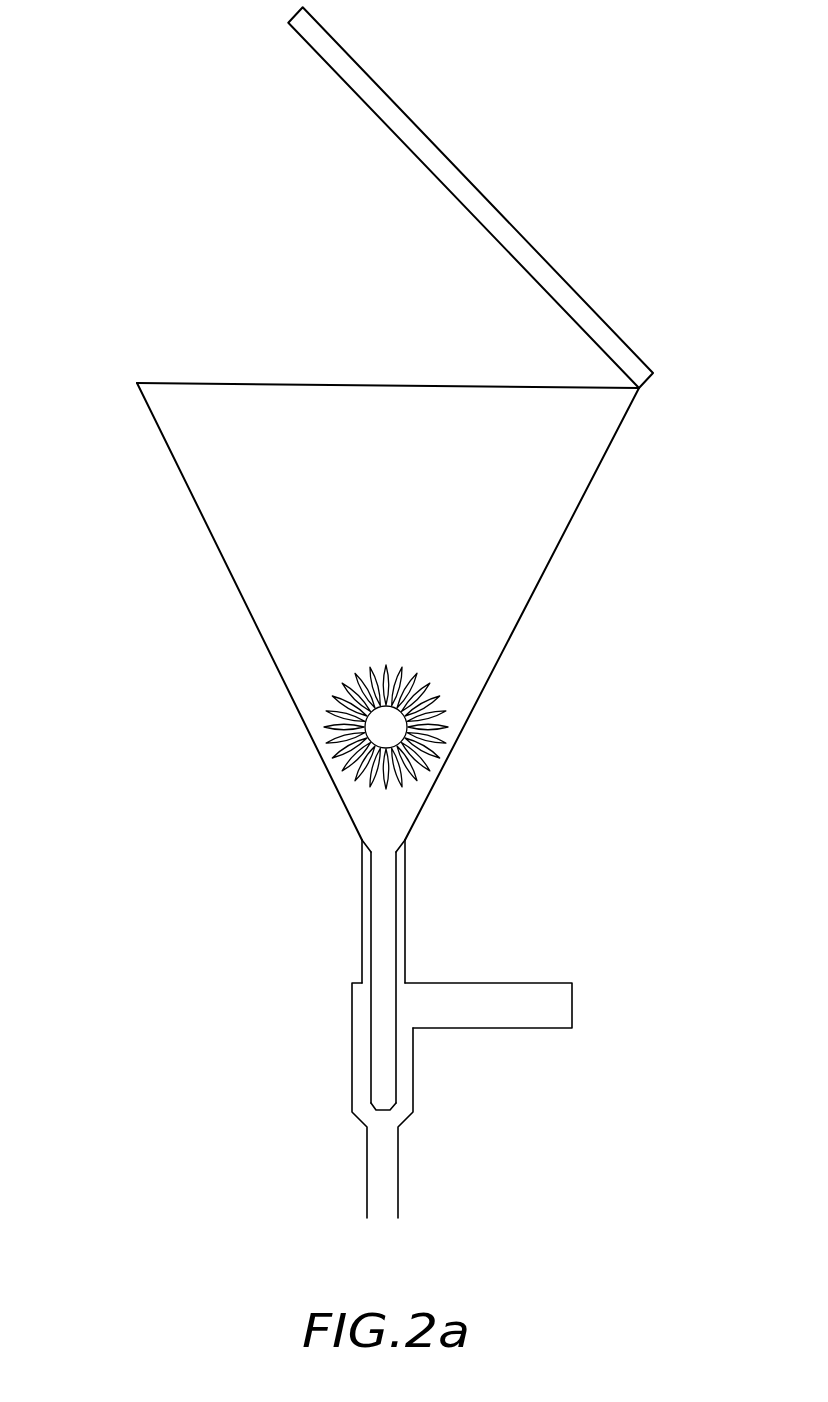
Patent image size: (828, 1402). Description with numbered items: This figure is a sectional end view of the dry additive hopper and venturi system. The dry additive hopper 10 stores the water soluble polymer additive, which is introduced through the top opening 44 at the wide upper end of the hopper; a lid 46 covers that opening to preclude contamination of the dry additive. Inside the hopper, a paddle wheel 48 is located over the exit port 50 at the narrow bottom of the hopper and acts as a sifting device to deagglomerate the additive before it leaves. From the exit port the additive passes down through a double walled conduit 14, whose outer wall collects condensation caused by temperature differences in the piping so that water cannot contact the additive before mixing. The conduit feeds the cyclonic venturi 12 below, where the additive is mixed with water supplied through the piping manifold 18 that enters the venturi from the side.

The dry additive hopper 10 is at (257, 623).
The cyclonic venturi 12 is at (352, 1042).
The double walled conduit 14 is at (363, 923).
The piping manifold 18 is at (510, 983).
The top opening 44 is at (242, 383).
The lid 46 is at (528, 242).
The paddle wheel 48 is at (445, 720).
The exit port 50 is at (385, 832).